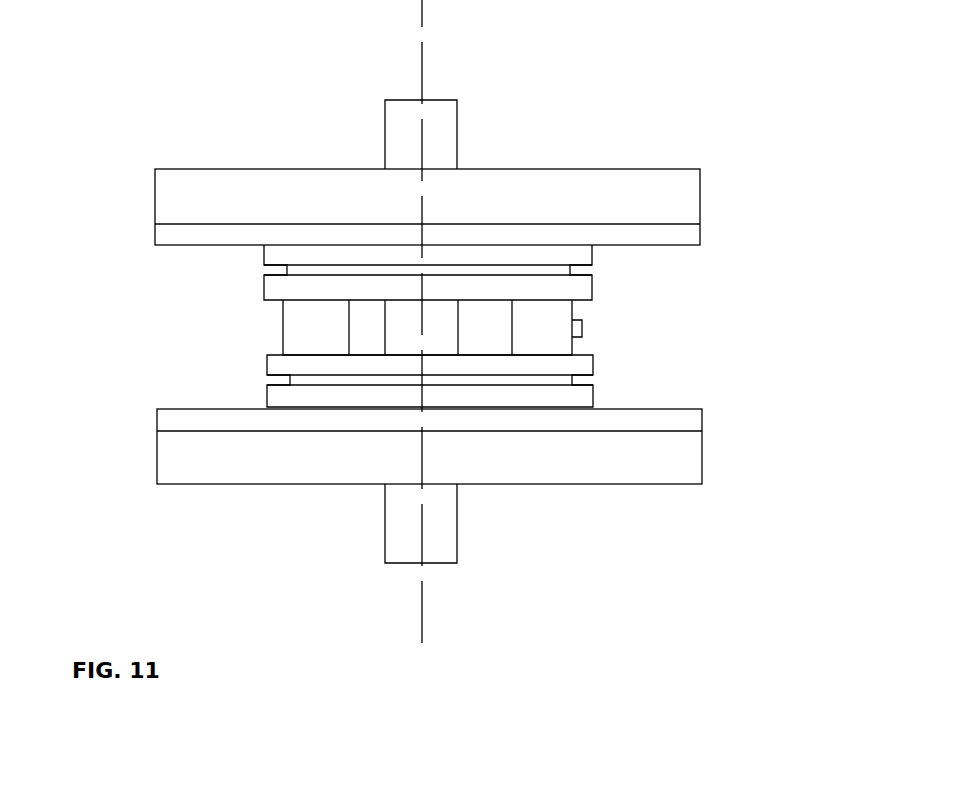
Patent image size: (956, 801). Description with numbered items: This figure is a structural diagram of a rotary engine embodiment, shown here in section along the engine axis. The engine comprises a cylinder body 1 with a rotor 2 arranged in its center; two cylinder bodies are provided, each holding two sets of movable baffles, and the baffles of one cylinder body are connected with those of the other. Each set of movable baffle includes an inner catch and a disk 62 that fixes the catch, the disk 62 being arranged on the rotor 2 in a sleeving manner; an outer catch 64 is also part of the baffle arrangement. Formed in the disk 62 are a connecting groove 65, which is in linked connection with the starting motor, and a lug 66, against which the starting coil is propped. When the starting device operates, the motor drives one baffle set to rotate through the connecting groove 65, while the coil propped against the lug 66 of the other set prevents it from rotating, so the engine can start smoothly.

The cylinder body 1 is at (177, 188).
The rotor 2 is at (458, 116).
The disk 62 is at (175, 244).
The outer catch 64 is at (283, 327).
The connecting groove 65 is at (598, 276).
The lug 66 is at (590, 335).